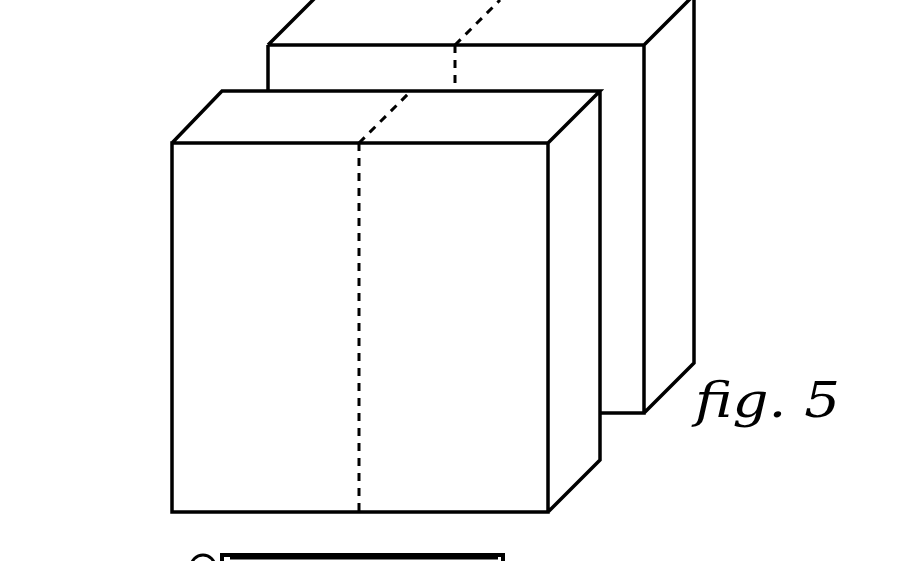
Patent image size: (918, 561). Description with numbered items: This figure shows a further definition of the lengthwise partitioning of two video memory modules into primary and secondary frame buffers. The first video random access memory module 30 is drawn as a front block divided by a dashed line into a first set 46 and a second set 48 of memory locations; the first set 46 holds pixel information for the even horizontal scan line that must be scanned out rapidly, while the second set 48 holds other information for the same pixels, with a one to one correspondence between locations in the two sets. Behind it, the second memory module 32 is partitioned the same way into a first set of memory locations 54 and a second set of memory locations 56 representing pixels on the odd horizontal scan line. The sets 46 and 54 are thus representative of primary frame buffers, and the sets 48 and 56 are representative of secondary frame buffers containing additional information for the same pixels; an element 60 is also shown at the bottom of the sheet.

The video random access memory module 30 is at (146, 266).
The second memory module 32 is at (714, 176).
The first set 46 is at (258, 466).
The second set 48 is at (440, 462).
The first set of memory locations 54 is at (380, 82).
The second set of memory locations 56 is at (538, 82).
The display controller 60 is at (311, 552).